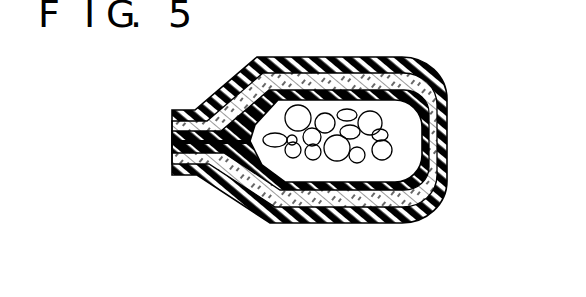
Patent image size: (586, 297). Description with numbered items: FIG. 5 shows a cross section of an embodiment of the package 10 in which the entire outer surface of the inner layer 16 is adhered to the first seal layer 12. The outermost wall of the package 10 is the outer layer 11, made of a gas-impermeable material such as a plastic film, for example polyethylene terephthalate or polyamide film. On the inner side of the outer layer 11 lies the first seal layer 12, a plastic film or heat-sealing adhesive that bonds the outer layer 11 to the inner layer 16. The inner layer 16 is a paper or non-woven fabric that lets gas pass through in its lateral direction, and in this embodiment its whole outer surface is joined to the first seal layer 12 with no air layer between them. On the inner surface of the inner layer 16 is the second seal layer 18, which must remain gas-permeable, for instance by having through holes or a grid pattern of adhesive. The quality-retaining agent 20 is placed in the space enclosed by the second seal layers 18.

The package 10 is at (345, 40).
The outer layer 11 is at (441, 82).
The first seal layer 12 is at (441, 193).
The inner layer 16 is at (433, 100).
The second seal layer 18 is at (392, 151).
The quality-retaining agent 20 is at (426, 141).